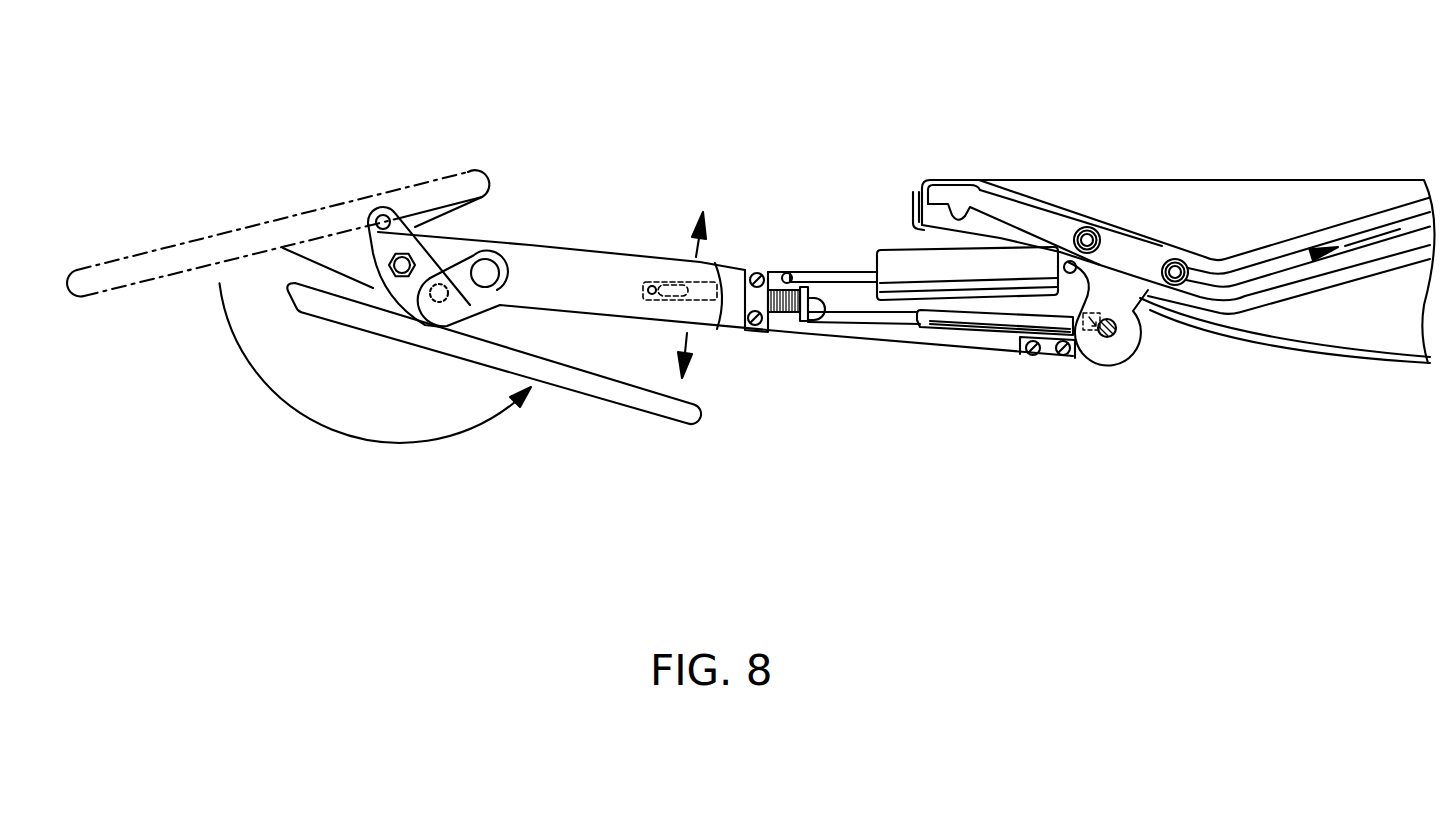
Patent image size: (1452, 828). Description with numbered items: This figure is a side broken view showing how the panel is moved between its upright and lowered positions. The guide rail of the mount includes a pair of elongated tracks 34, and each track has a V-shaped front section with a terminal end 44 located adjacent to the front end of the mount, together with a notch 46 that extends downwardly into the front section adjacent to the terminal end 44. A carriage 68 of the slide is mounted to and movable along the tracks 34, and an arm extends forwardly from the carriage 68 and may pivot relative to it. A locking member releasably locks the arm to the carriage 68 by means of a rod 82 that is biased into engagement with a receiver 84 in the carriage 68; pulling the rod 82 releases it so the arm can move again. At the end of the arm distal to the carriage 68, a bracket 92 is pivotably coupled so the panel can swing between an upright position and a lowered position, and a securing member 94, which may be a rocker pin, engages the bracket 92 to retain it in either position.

The tracks 34 is at (1367, 234).
The terminal end 44 is at (920, 181).
The notch 46 is at (972, 208).
The carriage 68 is at (1122, 253).
The rod 82 is at (920, 322).
The receiver 84 is at (1098, 340).
The bracket 92 is at (405, 230).
The securing member 94 is at (441, 302).